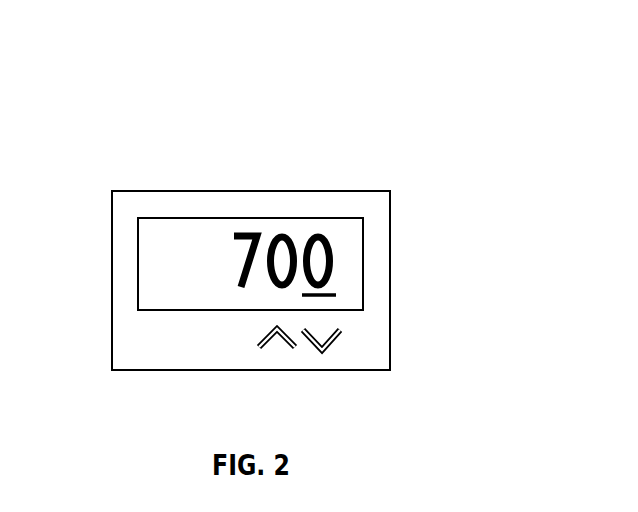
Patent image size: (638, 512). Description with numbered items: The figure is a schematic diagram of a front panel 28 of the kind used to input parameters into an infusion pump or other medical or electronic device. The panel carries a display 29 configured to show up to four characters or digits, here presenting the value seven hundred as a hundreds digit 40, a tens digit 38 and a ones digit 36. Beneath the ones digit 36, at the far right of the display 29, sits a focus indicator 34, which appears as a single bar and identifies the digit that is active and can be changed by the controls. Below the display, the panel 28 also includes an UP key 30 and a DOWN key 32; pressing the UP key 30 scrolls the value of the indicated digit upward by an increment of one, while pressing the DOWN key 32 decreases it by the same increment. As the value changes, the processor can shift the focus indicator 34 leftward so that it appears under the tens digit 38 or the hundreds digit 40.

The front panel 28 is at (396, 104).
The display 29 is at (141, 218).
The UP key 30 is at (270, 345).
The DOWN key 32 is at (333, 341).
The focus indicator 34 is at (336, 295).
The ones digit 36 is at (317, 235).
The tens digit 38 is at (283, 235).
The hundreds digit 40 is at (246, 233).